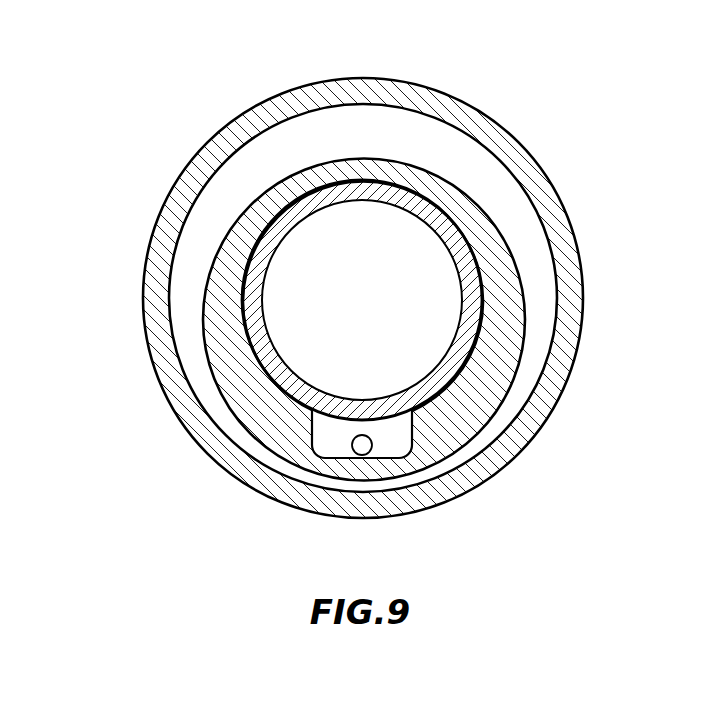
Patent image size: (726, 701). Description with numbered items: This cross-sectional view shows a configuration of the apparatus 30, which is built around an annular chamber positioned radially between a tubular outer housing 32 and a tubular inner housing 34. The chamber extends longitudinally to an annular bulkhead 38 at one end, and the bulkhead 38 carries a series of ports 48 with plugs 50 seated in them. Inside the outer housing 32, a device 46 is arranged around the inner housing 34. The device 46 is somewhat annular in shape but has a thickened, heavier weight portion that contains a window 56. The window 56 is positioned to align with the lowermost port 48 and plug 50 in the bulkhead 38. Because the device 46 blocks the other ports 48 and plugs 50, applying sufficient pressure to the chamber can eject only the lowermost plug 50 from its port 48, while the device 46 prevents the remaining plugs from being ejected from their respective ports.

The apparatus 30 is at (603, 102).
The tubular outer housing 32 is at (142, 318).
The tubular inner housing 34 is at (268, 308).
The annular bulkhead 38 is at (453, 128).
The device 46 is at (490, 220).
The port 48 is at (356, 453).
The plug 50 is at (380, 448).
The window 56 is at (412, 430).